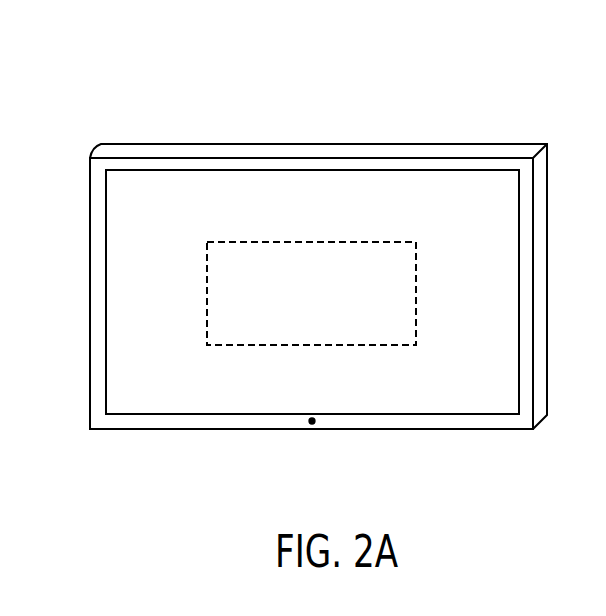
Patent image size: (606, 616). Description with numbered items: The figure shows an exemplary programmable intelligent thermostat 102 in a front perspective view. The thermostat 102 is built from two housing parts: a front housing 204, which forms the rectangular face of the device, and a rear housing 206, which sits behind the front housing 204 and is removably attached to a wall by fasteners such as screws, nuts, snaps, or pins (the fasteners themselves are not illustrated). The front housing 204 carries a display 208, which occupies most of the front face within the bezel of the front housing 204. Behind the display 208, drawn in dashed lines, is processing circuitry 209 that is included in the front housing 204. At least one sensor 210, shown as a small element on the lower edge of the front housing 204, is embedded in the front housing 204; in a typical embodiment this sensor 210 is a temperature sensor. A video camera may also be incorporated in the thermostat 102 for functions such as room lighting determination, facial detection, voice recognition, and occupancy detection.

The programmable intelligent thermostat 102 is at (299, 256).
The front housing 204 is at (100, 301).
The rear housing 206 is at (167, 153).
The display 208 is at (432, 180).
The processing circuitry 209 is at (416, 287).
The sensor 210 is at (314, 425).